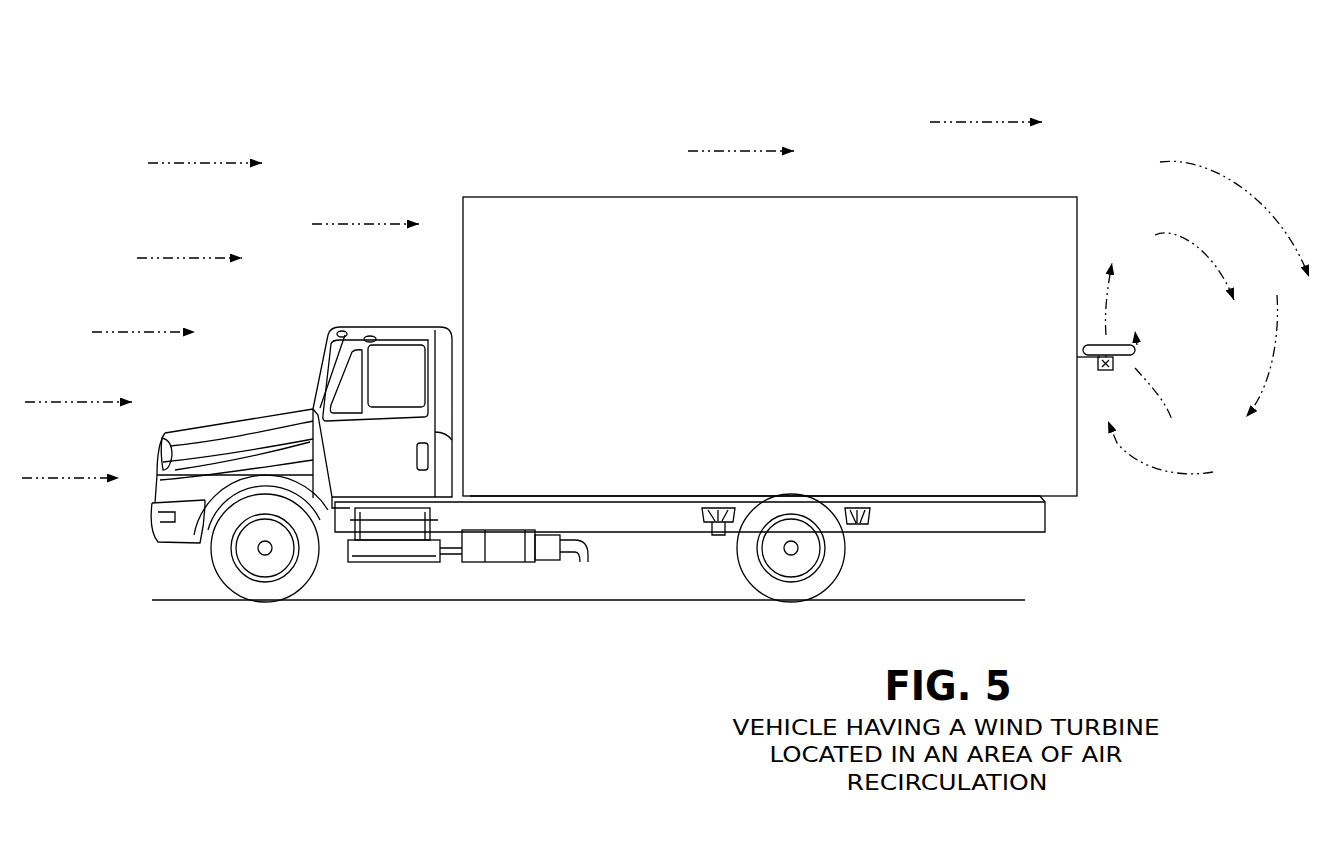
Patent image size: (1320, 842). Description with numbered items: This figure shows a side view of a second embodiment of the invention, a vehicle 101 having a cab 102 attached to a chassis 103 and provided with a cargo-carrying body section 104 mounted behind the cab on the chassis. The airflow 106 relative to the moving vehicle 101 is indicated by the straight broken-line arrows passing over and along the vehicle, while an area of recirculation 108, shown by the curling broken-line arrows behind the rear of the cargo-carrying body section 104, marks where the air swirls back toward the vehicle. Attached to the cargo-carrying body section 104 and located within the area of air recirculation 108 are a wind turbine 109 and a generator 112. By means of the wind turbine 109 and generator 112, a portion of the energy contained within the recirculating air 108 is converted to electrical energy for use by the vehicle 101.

The vehicle 101 is at (221, 421).
The cab 102 is at (372, 327).
The chassis 103 is at (633, 524).
The cargo-carrying body section 104 is at (552, 242).
The airflow 106 is at (742, 151).
The area of recirculation 108 is at (1181, 298).
The wind turbine 109 is at (1124, 361).
The generator 112 is at (1109, 373).